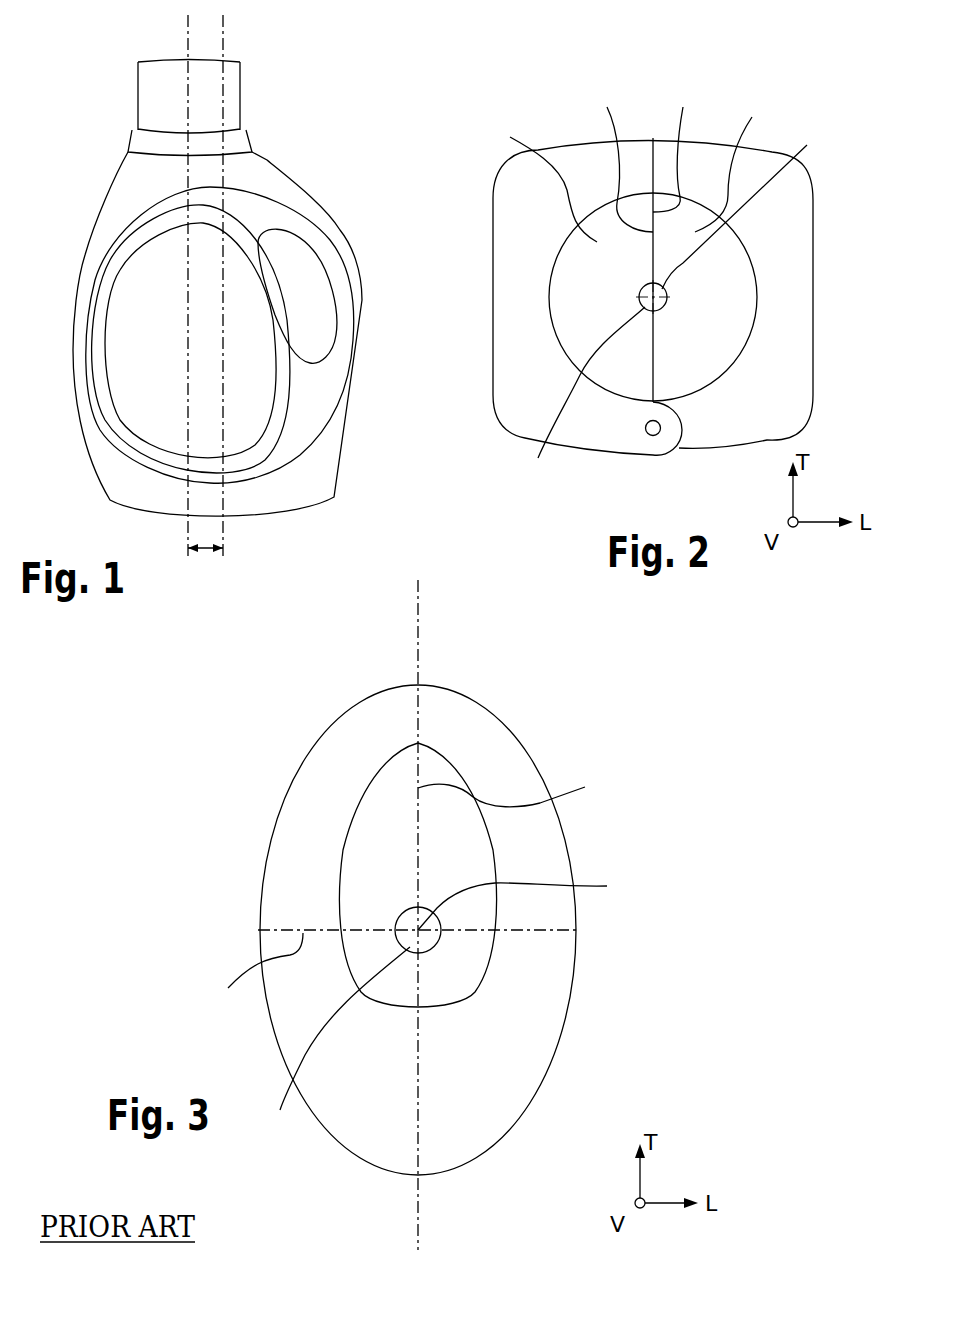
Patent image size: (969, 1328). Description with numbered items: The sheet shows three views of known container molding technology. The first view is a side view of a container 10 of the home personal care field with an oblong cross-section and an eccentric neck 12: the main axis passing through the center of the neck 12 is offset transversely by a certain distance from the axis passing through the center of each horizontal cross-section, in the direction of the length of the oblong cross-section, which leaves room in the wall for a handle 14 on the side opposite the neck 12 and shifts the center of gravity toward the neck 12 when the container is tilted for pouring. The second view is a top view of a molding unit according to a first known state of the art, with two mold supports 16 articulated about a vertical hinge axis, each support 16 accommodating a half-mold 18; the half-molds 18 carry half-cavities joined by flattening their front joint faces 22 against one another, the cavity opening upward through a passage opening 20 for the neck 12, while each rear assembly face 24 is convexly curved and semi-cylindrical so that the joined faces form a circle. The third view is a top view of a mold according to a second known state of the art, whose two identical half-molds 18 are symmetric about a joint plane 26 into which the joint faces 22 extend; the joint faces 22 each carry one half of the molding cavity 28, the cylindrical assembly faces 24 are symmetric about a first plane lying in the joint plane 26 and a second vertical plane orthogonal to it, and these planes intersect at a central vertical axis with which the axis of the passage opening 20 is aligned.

In FIG. 1, the container 10 is at (369, 232).
In FIG. 3, the container 10 is at (670, 836).
In FIG. 1, the neck 12 is at (158, 96).
In FIG. 1, the handle 14 is at (310, 213).
In FIG. 2, the mold supports 16 is at (513, 320).
In FIG. 2, the half-mold 18 is at (632, 248).
In FIG. 3, the half-mold 18 is at (318, 802).
In FIG. 2, the passage opening 20 is at (595, 381).
In FIG. 3, the passage opening 20 is at (349, 1021).
In FIG. 2, the front joint face 22 is at (642, 158).
In FIG. 3, the front joint face 22 is at (420, 703).
In FIG. 2, the assembly face 24 is at (550, 271).
In FIG. 3, the assembly face 24 is at (260, 856).
In FIG. 3, the joint plane 26 is at (418, 617).
In FIG. 3, the molding cavity 28 is at (345, 852).